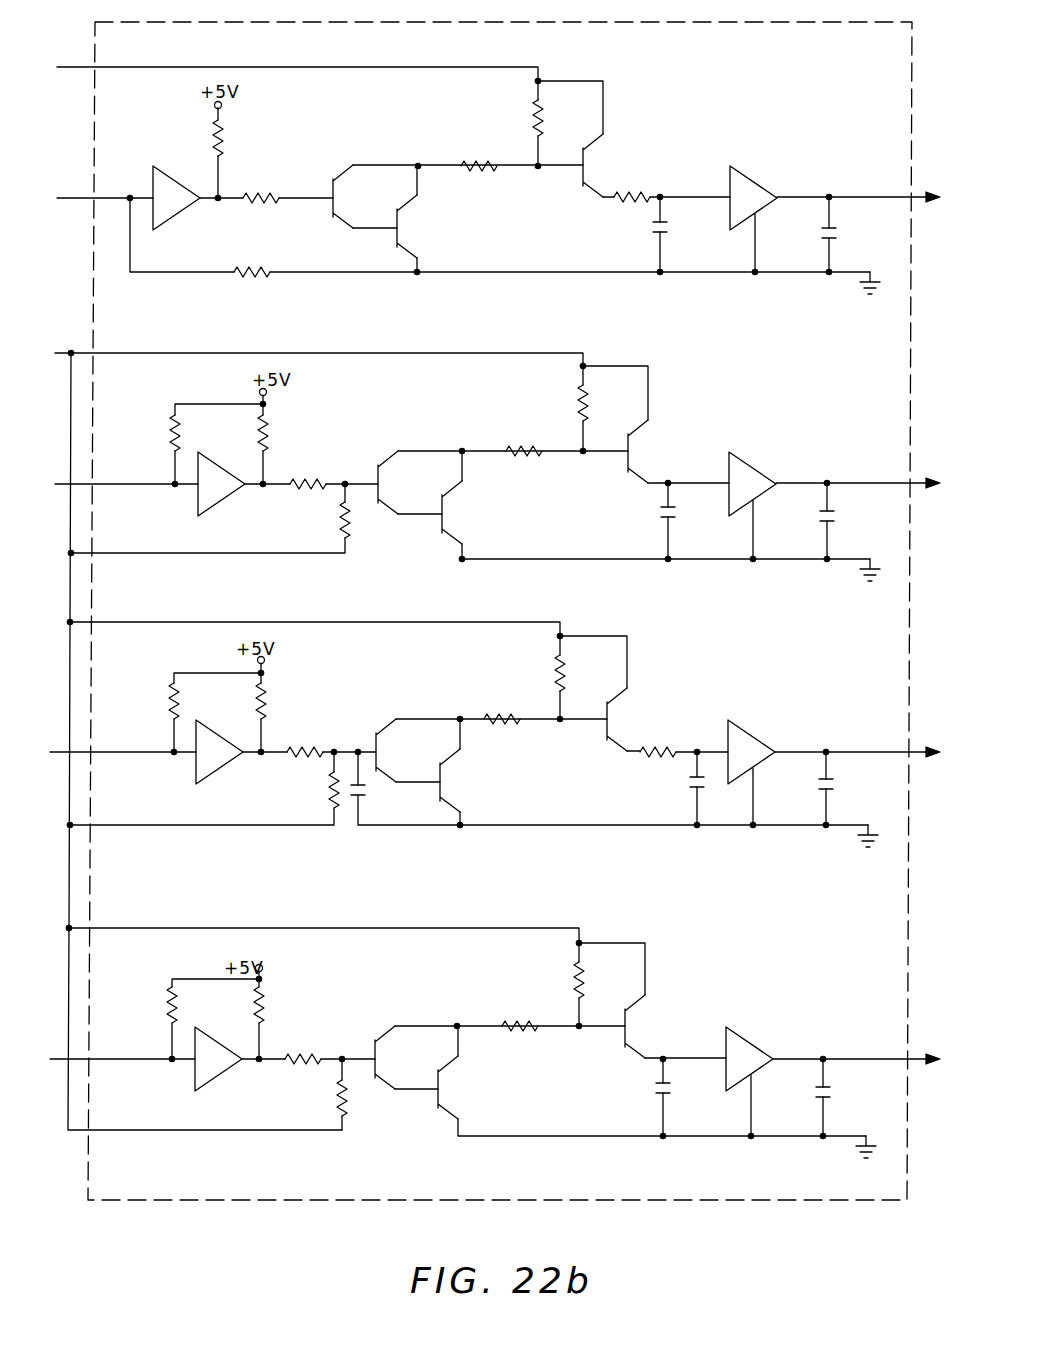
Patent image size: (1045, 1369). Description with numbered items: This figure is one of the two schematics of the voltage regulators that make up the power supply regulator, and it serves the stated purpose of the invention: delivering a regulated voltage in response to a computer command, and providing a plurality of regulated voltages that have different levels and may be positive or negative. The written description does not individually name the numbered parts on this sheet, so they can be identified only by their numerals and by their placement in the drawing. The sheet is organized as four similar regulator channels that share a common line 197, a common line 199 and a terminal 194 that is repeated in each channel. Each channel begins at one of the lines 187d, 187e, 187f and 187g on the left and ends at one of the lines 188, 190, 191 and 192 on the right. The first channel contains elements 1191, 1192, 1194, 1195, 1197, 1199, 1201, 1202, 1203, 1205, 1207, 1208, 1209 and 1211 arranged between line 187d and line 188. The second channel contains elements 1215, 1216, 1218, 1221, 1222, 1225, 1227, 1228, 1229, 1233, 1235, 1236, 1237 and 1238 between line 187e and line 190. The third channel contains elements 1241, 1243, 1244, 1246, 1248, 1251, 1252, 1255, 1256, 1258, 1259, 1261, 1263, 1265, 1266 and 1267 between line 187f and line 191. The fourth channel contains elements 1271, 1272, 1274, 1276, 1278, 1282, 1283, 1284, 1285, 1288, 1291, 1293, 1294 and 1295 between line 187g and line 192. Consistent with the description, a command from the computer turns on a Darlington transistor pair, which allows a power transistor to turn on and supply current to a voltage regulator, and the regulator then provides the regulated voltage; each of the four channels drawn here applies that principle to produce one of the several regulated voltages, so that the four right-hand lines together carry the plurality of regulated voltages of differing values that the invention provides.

The supply line 197 is at (82, 66).
The supply line 199 is at (82, 352).
The +5V supply terminal 194 is at (222, 106).
The input line 187d is at (82, 196).
The input line 187e is at (70, 482).
The input line 187f is at (122, 744).
The input line 187g is at (122, 1056).
The output line 188 is at (920, 200).
The output line 190 is at (922, 486).
The output line 191 is at (918, 756).
The output line 192 is at (918, 1062).
The buffer amplifier 1191 is at (168, 170).
The feedback resistor 1192 is at (252, 262).
The transistor 1194 is at (329, 218).
The resistor 1195 is at (279, 192).
The pull-up resistor 1197 is at (224, 136).
The transistor 1199 is at (389, 240).
The resistor 1201 is at (534, 112).
The resistor 1202 is at (479, 160).
The transistor 1203 is at (582, 183).
The resistor 1205 is at (627, 196).
The buffer amplifier 1207 is at (728, 234).
The capacitor 1208 is at (658, 250).
The ground connection 1209 is at (754, 256).
The capacitor 1211 is at (826, 238).
The buffer amplifier 1215 is at (202, 516).
The resistor 1216 is at (316, 494).
The transistor 1218 is at (367, 476).
The pull-up resistor 1221 is at (258, 432).
The pull-up resistor 1222 is at (170, 432).
The resistor 1225 is at (346, 530).
The transistor 1227 is at (450, 540).
The resistor 1228 is at (542, 454).
The resistor 1229 is at (582, 400).
The transistor 1233 is at (632, 474).
The buffer amplifier 1235 is at (752, 464).
The capacitor 1236 is at (668, 528).
The ground connection 1237 is at (778, 528).
The capacitor 1238 is at (830, 520).
The buffer amplifier 1241 is at (228, 730).
The transistor 1243 is at (364, 740).
The resistor 1244 is at (302, 762).
The pull-up resistor 1246 is at (266, 700).
The pull-up resistor 1248 is at (174, 702).
The resistor 1251 is at (334, 794).
The transistor 1252 is at (436, 770).
The resistor 1255 is at (556, 670).
The resistor 1256 is at (500, 722).
The capacitor 1258 is at (358, 800).
The transistor 1259 is at (612, 740).
The buffer amplifier 1261 is at (746, 730).
The resistor 1263 is at (646, 752).
The capacitor 1265 is at (696, 792).
The ground connection 1266 is at (752, 796).
The capacitor 1267 is at (822, 786).
The buffer amplifier 1271 is at (230, 1036).
The resistor 1272 is at (302, 1067).
The transistor 1274 is at (364, 1046).
The pull-up resistor 1276 is at (264, 1000).
The pull-up resistor 1278 is at (178, 1010).
The resistor 1282 is at (340, 1108).
The transistor 1283 is at (434, 1080).
The resistor 1284 is at (514, 1024).
The resistor 1285 is at (576, 980).
The transistor 1288 is at (626, 1050).
The buffer amplifier 1291 is at (746, 1040).
The capacitor 1293 is at (660, 1104).
The ground connection 1294 is at (774, 1094).
The capacitor 1295 is at (826, 1094).